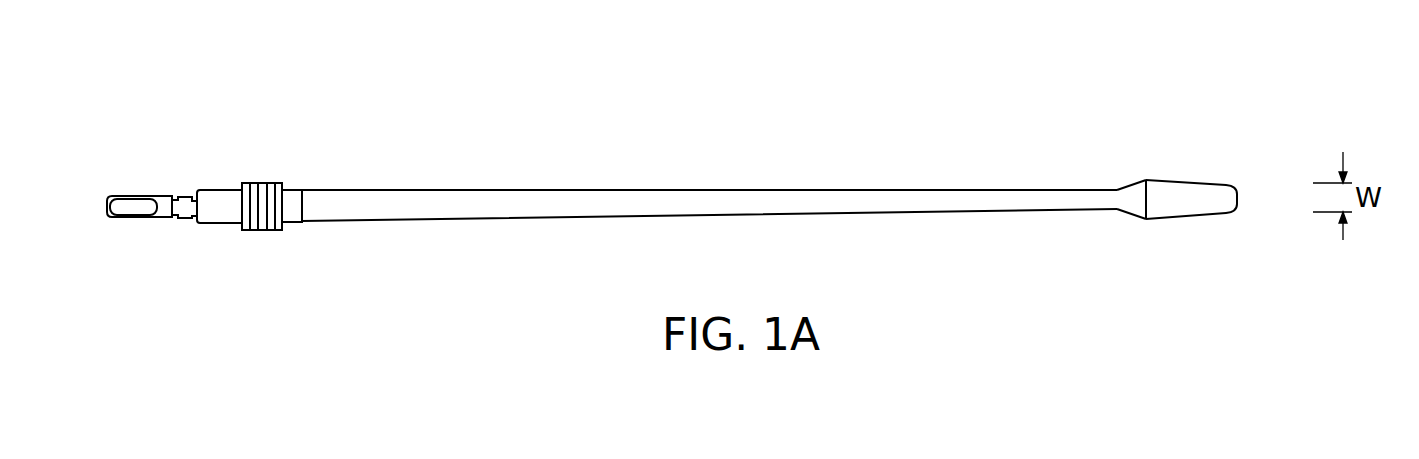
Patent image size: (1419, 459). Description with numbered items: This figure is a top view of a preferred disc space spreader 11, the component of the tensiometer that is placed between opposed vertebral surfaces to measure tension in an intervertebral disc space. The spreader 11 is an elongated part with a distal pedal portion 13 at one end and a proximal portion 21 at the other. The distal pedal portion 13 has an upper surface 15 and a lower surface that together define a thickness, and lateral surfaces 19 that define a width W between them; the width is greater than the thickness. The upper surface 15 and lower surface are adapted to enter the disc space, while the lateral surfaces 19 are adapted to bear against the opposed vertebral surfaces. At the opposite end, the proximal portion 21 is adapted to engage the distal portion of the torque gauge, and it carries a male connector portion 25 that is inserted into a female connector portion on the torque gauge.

The disc space spreader 11 is at (443, 163).
The distal pedal portion 13 is at (1195, 152).
The upper surface 15 is at (1218, 192).
The lateral surfaces 19 is at (1175, 178).
The proximal portion 21 is at (213, 222).
The male connector portion 25 is at (132, 198).